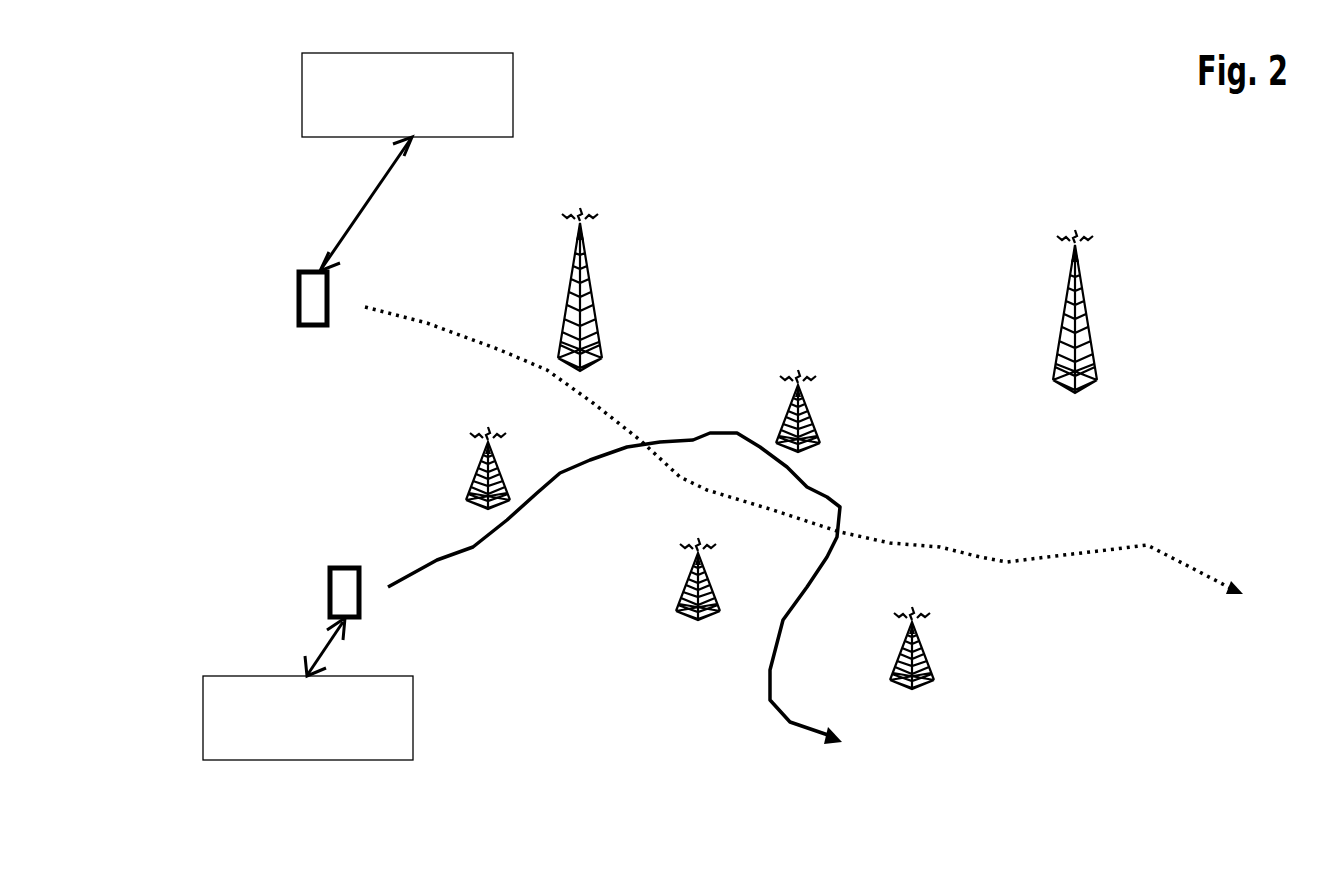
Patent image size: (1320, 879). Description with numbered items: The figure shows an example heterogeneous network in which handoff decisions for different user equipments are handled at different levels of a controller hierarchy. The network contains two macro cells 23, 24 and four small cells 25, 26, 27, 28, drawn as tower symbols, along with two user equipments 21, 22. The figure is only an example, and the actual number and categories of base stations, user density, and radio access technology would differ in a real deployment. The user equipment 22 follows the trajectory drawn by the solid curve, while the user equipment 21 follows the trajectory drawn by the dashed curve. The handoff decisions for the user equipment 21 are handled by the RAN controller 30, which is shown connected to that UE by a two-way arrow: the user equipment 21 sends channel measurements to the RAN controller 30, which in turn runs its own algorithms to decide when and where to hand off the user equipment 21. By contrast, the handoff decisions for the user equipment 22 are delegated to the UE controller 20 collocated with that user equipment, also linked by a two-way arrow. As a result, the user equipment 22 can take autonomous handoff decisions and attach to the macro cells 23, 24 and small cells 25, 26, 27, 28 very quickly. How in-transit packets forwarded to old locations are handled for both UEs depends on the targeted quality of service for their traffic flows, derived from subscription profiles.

The UE controller 20 is at (325, 760).
The user equipment 21 is at (296, 285).
The user equipment 22 is at (327, 590).
The macro cell 23 is at (563, 292).
The macro cell 24 is at (1057, 333).
The small cell 25 is at (815, 425).
The small cell 26 is at (470, 483).
The small cell 27 is at (677, 602).
The small cell 28 is at (930, 663).
The RAN controller 30 is at (515, 97).